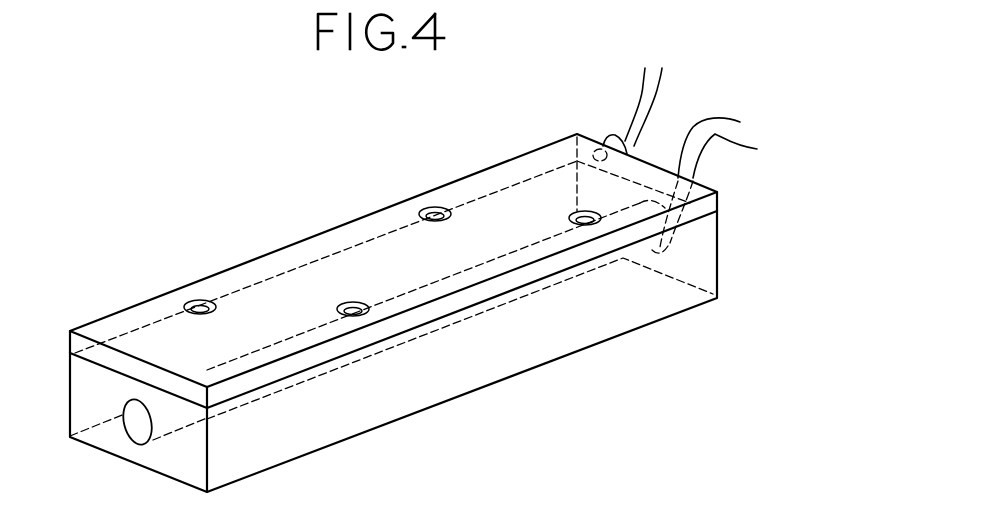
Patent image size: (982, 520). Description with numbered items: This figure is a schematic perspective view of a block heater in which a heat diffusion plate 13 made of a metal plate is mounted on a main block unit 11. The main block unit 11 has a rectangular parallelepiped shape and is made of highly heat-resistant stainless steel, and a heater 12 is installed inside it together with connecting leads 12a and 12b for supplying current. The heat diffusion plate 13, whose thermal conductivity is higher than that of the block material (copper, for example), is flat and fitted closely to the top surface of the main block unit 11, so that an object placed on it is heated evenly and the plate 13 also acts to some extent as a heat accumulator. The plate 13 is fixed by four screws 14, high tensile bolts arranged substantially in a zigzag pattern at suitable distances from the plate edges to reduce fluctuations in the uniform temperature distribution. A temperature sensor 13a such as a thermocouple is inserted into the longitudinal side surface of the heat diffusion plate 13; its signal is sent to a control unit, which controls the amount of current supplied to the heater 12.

The main block unit 11 is at (507, 353).
The heater 12 is at (137, 430).
The connecting lead 12a is at (766, 149).
The connecting lead 12b is at (679, 104).
The heat diffusion plate 13 is at (273, 260).
The temperature sensor 13a is at (578, 120).
The screws 14 is at (683, 333).